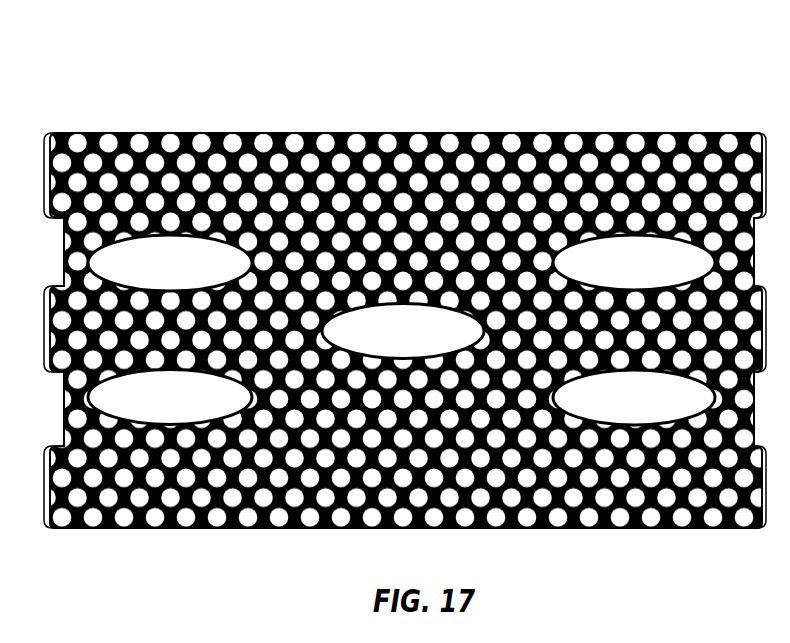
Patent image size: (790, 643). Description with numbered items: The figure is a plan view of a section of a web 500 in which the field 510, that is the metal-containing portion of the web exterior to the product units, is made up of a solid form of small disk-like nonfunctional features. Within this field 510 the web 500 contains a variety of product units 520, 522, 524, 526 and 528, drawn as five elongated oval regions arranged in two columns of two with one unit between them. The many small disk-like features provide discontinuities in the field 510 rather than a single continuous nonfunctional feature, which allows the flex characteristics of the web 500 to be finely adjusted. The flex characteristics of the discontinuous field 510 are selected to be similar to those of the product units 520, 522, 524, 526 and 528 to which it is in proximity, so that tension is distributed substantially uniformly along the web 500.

The web 500 is at (405, 276).
The field 510 is at (394, 128).
The product unit 520 is at (145, 278).
The product unit 522 is at (145, 412).
The product unit 524 is at (375, 345).
The product unit 526 is at (608, 277).
The product unit 528 is at (608, 412).